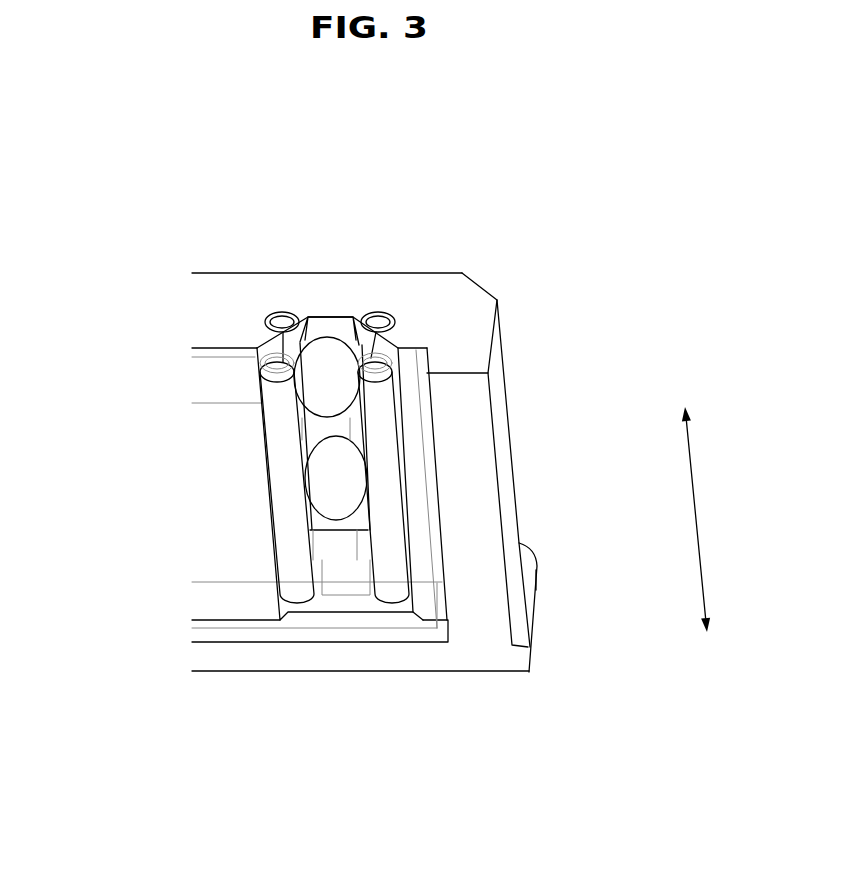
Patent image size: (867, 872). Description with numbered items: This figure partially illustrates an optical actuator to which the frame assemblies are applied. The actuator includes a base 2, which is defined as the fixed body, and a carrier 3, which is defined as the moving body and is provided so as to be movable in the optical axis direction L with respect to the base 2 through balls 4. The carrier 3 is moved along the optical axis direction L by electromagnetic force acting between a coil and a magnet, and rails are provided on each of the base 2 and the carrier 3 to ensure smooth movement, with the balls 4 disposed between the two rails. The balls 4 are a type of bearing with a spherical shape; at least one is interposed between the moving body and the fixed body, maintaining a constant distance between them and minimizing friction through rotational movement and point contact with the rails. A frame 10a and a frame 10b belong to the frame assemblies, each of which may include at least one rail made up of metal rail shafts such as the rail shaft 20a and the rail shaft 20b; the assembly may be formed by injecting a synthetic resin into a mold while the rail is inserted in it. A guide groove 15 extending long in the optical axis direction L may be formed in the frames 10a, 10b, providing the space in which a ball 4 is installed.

The base 2 is at (533, 350).
The carrier 3 is at (233, 528).
The balls 4 is at (327, 327).
The frame 10a is at (453, 285).
The frame 10b is at (207, 408).
The guide groove 15 is at (257, 348).
The rail shaft 20a is at (275, 313).
The rail shaft 20b is at (288, 548).
The optical axis direction L is at (704, 519).